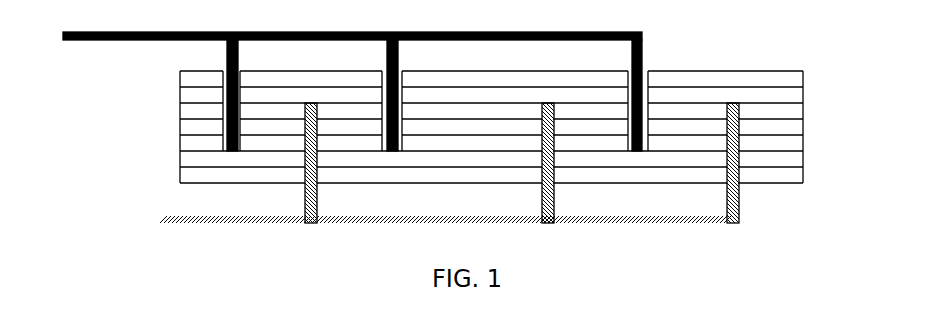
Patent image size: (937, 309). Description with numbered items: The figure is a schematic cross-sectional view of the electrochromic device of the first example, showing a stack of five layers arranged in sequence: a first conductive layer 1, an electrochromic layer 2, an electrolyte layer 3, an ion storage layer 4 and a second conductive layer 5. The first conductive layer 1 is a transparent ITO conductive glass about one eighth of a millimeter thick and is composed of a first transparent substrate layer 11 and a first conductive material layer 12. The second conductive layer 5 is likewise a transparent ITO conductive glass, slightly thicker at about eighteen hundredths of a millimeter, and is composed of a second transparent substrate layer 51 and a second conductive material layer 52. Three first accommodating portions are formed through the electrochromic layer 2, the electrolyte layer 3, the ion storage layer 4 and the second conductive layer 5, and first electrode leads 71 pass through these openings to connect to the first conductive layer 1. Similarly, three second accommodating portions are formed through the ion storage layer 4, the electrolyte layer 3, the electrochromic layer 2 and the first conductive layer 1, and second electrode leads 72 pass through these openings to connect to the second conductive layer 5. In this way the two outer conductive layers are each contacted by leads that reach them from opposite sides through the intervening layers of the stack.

The first conductive layer 1 is at (547, 65).
The first transparent substrate layer 11 is at (783, 78).
The first conductive material layer 12 is at (788, 98).
The electrochromic layer 2 is at (788, 109).
The electrolyte layer 3 is at (192, 126).
The ion storage layer 4 is at (788, 143).
The second conductive layer 5 is at (414, 180).
The second transparent substrate layer 51 is at (183, 175).
The second conductive material layer 52 is at (192, 158).
The first electrode lead 71 is at (735, 192).
The second electrode lead 72 is at (642, 62).